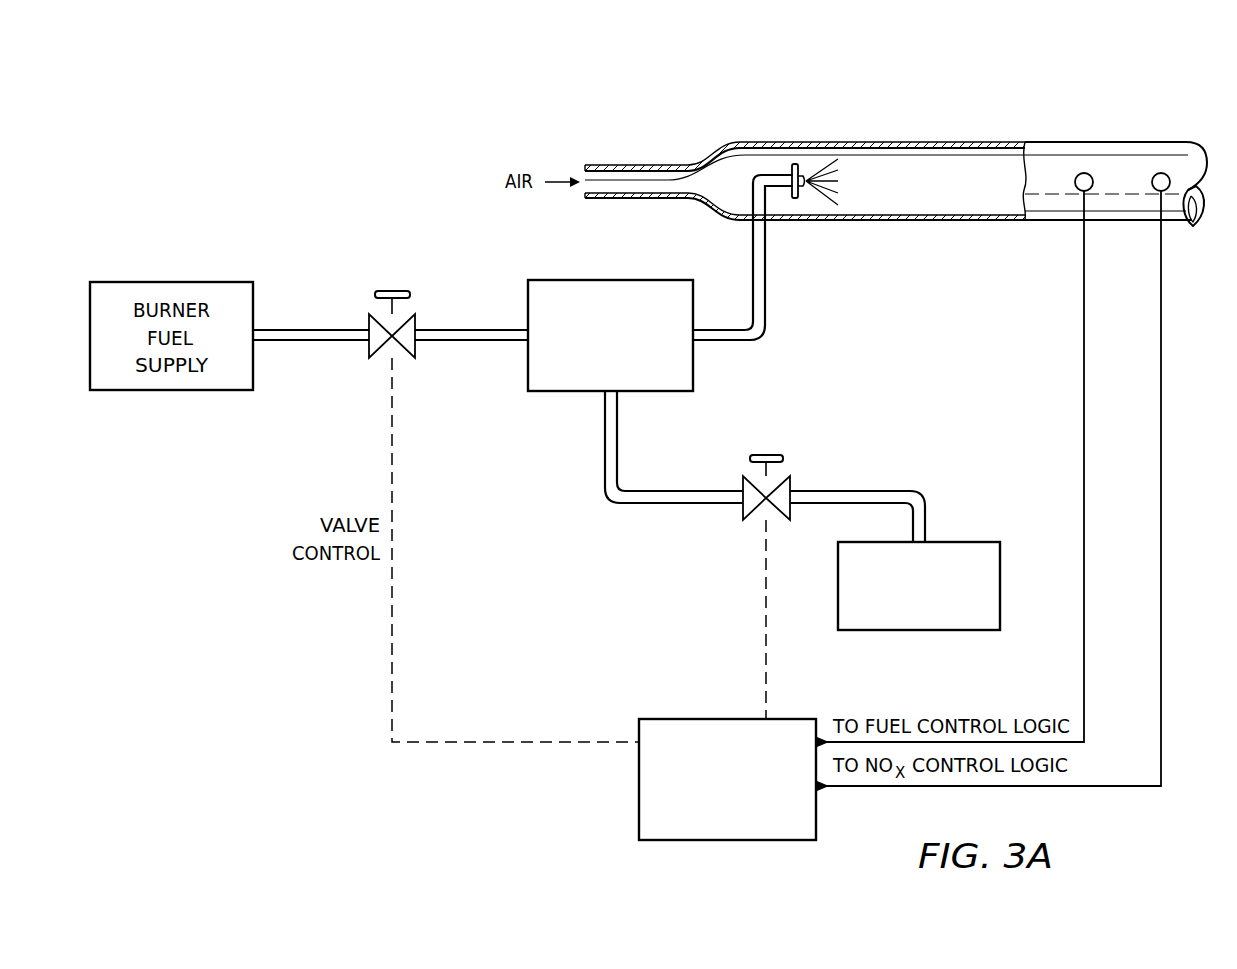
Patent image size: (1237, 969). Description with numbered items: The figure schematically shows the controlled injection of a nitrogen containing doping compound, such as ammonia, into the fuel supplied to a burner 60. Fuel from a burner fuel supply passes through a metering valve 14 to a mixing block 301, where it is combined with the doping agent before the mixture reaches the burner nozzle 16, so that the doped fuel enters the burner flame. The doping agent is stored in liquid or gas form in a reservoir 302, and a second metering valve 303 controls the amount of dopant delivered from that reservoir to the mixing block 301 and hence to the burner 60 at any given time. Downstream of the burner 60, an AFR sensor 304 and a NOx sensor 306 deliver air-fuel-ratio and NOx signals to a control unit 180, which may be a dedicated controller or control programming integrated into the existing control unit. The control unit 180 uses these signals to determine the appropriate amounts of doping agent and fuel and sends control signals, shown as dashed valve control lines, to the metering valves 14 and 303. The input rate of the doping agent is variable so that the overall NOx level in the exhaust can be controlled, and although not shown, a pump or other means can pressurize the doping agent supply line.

The metering valve 14 is at (384, 291).
The burner nozzle 16 is at (806, 166).
The burner 60 is at (912, 206).
The control unit 180 is at (639, 783).
The mixing block 301 is at (593, 280).
The reservoir 302 is at (935, 632).
The metering valve 303 is at (772, 455).
The AFR sensor 304 is at (1084, 173).
The NOx sensor 306 is at (1161, 173).